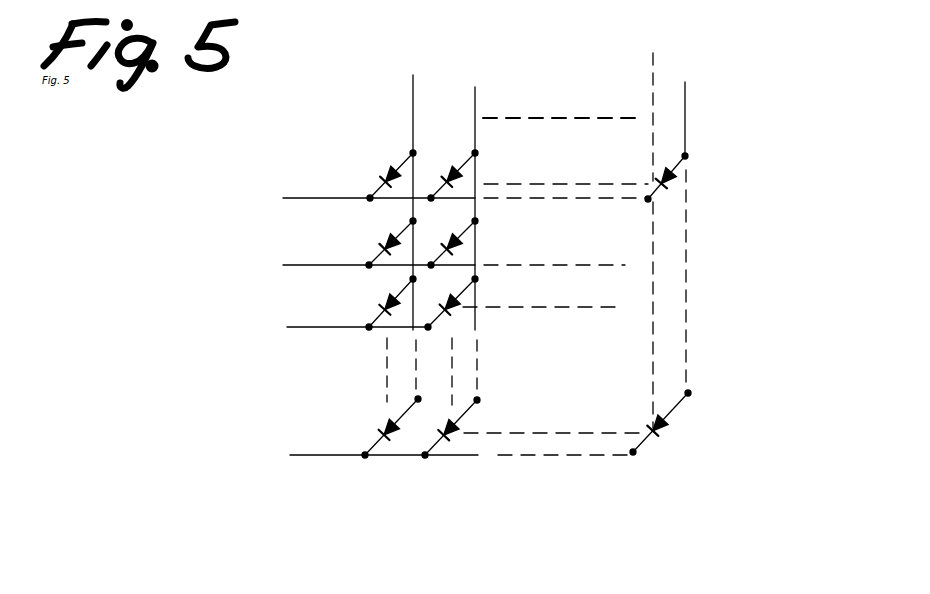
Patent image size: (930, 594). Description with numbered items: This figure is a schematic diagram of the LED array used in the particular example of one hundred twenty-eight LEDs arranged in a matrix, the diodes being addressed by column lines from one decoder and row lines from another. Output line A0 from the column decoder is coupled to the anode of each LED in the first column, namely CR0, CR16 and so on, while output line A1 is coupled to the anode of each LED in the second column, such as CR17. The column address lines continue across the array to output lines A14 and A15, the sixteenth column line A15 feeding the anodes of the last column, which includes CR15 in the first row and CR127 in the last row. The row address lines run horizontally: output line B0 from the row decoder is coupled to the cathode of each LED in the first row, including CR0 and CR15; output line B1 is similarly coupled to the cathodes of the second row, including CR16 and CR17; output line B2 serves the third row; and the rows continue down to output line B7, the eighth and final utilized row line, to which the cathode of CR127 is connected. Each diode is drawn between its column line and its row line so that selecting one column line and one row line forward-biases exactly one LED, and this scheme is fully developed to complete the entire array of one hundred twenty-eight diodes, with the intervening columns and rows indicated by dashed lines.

The output line A0 is at (404, 221).
The output line A1 is at (472, 223).
The output line A14 is at (653, 222).
The output line A15 is at (695, 224).
The output line B0 is at (444, 165).
The output line B1 is at (432, 268).
The output line B2 is at (431, 326).
The output line B7 is at (440, 451).
The LED CR0 is at (387, 172).
The LED CR15 is at (673, 173).
The LED CR16 is at (382, 240).
The LED CR17 is at (460, 238).
The LED CR127 is at (653, 436).